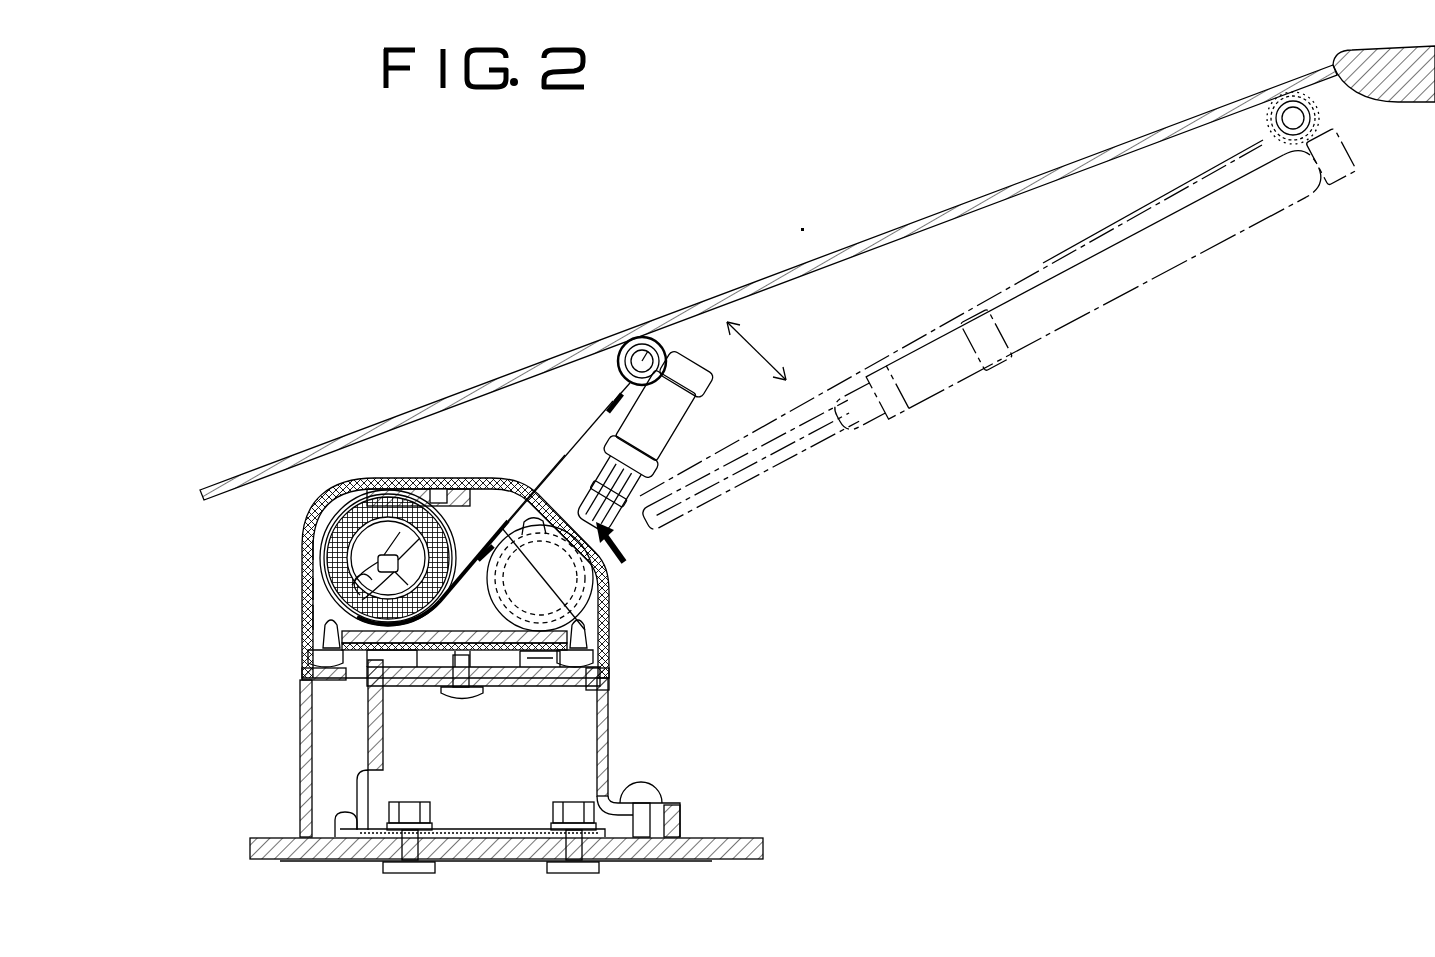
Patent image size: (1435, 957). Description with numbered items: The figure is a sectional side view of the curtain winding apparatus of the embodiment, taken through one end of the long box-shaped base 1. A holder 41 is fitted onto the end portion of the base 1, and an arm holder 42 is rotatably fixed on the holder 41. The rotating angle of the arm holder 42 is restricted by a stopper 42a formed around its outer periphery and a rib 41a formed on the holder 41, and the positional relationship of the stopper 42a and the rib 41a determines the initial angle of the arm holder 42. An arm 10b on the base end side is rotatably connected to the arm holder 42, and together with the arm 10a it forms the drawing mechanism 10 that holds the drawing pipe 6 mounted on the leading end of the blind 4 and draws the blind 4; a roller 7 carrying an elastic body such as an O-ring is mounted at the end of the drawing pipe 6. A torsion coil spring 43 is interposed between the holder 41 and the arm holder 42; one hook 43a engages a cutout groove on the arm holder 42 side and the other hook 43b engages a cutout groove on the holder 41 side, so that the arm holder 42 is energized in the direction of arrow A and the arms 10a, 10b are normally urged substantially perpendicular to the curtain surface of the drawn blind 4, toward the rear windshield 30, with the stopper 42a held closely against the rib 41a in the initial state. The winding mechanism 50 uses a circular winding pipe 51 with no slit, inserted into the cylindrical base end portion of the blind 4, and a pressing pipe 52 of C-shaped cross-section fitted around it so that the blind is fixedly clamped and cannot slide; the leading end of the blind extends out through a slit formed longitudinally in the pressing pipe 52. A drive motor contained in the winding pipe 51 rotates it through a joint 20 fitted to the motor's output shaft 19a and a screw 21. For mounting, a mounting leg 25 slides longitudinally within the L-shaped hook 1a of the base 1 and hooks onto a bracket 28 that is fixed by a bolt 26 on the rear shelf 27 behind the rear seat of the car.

The base 1 is at (362, 488).
The L-shaped hook 1a is at (350, 672).
The blind 4 is at (598, 414).
The drawing pipe 6 is at (633, 338).
The roller 7 is at (1322, 108).
The drawing mechanism 10 is at (630, 514).
The arm 10a is at (692, 458).
The arm 10b is at (628, 536).
The output shaft 19a is at (300, 613).
The joint 20 is at (328, 522).
The tapping screw 21 is at (405, 545).
The mounting leg 25 is at (610, 748).
The bolt 26 is at (590, 872).
The rear shelf 27 is at (745, 838).
The bracket 28 is at (493, 829).
The rear windshield 30 is at (519, 370).
The holder 41 is at (472, 488).
The rib 41a is at (557, 460).
The arm holder 42 is at (606, 608).
The stopper 42a is at (615, 578).
The torsion coil spring 43 is at (612, 613).
The hook 43a is at (520, 500).
The hook 43b is at (433, 690).
The winding mechanism 50 is at (300, 590).
The winding pipe 51 is at (301, 553).
The pressing pipe 52 is at (405, 500).
The arrow A is at (625, 548).